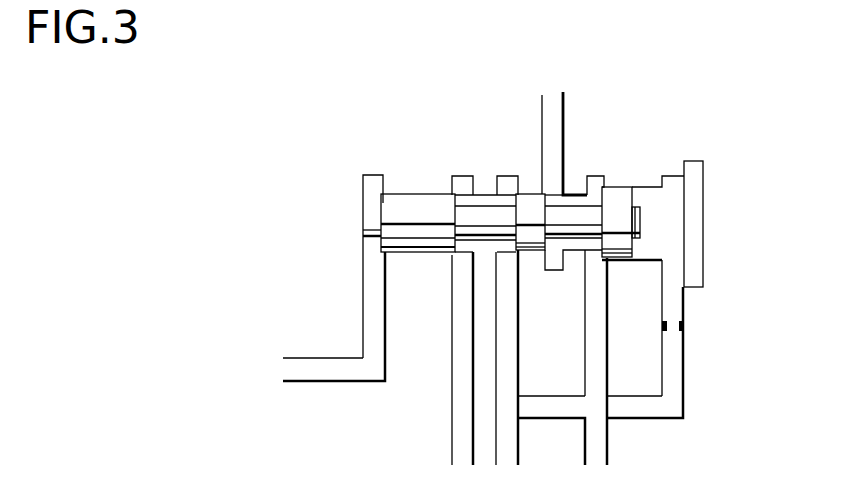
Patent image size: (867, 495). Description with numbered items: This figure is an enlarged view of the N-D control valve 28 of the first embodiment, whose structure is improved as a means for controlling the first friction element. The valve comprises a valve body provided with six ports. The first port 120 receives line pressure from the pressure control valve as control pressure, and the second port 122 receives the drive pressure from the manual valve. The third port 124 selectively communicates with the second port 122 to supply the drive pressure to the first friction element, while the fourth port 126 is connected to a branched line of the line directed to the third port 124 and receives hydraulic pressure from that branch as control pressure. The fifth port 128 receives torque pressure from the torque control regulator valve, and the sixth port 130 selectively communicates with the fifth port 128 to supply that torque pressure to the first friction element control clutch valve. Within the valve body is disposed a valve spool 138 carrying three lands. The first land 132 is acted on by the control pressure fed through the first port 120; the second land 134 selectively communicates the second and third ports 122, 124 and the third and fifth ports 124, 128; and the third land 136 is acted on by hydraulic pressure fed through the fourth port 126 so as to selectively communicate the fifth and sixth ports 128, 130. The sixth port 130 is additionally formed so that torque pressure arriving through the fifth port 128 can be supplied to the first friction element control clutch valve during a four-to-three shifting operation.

The N-D control valve 28 is at (716, 213).
The first port 120 is at (364, 257).
The second port 122 is at (460, 259).
The third port 124 is at (512, 268).
The fourth port 126 is at (677, 301).
The fifth port 128 is at (552, 180).
The sixth port 130 is at (602, 270).
The first land 132 is at (416, 200).
The second land 134 is at (529, 204).
The third land 136 is at (617, 194).
The valve spool 138 is at (572, 196).